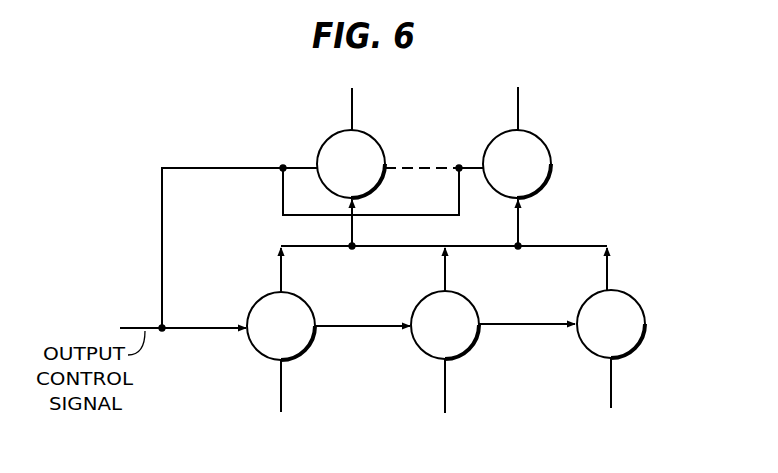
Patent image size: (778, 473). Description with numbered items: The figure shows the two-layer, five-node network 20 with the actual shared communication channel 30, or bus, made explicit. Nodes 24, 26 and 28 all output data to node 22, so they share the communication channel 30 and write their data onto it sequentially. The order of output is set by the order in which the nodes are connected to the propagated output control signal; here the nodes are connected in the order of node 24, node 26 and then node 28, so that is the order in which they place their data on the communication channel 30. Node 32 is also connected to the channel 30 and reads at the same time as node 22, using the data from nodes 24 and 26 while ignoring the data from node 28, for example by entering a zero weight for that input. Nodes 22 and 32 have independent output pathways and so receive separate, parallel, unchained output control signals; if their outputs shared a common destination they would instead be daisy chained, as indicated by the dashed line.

The network 20 is at (146, 147).
The node 22 is at (343, 130).
The node 24 is at (312, 347).
The node 26 is at (480, 337).
The node 28 is at (645, 333).
The communication channel 30 is at (298, 246).
The node 32 is at (581, 112).